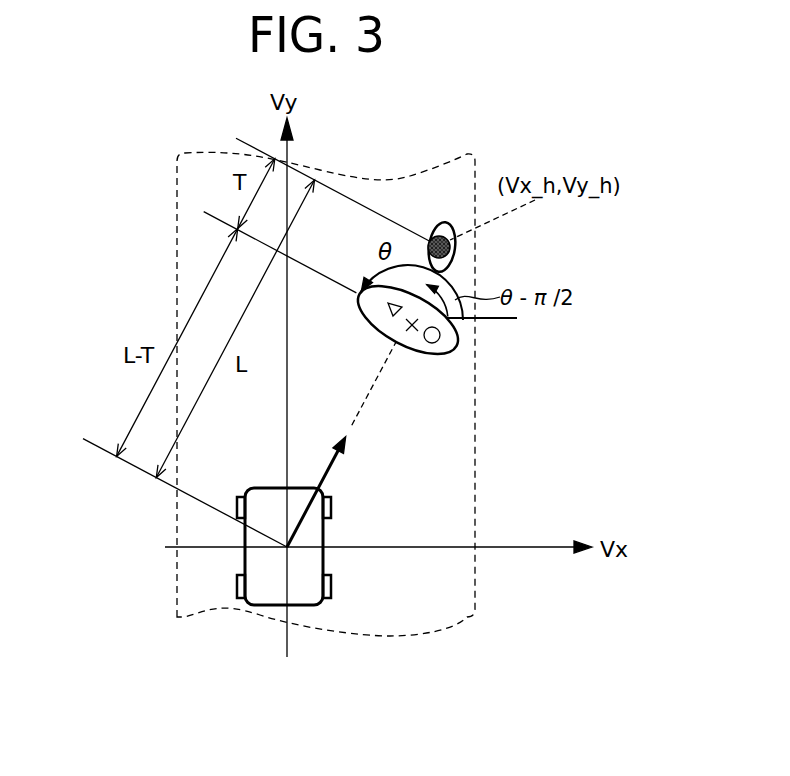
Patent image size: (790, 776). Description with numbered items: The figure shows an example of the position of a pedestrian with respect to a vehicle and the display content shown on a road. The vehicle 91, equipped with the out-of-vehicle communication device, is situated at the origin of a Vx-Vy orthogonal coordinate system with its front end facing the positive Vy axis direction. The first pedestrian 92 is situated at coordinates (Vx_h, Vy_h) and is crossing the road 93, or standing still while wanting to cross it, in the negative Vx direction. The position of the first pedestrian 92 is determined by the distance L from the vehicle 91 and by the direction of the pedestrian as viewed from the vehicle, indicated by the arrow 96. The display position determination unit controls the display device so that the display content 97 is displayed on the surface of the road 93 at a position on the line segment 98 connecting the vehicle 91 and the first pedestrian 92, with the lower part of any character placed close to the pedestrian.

The vehicle 91 is at (253, 605).
The first pedestrian 92 is at (455, 258).
The road 93 is at (477, 455).
The arrow 96 is at (345, 445).
The display content 97 is at (455, 343).
The line segment 98 is at (368, 387).